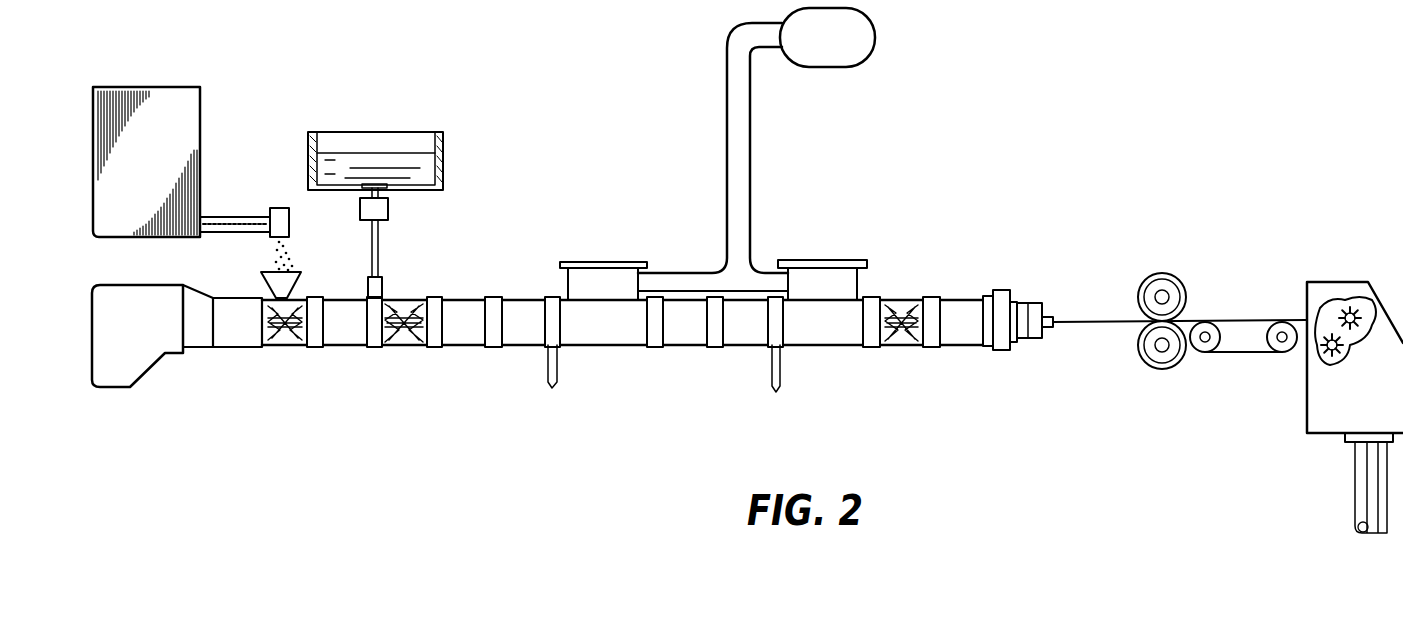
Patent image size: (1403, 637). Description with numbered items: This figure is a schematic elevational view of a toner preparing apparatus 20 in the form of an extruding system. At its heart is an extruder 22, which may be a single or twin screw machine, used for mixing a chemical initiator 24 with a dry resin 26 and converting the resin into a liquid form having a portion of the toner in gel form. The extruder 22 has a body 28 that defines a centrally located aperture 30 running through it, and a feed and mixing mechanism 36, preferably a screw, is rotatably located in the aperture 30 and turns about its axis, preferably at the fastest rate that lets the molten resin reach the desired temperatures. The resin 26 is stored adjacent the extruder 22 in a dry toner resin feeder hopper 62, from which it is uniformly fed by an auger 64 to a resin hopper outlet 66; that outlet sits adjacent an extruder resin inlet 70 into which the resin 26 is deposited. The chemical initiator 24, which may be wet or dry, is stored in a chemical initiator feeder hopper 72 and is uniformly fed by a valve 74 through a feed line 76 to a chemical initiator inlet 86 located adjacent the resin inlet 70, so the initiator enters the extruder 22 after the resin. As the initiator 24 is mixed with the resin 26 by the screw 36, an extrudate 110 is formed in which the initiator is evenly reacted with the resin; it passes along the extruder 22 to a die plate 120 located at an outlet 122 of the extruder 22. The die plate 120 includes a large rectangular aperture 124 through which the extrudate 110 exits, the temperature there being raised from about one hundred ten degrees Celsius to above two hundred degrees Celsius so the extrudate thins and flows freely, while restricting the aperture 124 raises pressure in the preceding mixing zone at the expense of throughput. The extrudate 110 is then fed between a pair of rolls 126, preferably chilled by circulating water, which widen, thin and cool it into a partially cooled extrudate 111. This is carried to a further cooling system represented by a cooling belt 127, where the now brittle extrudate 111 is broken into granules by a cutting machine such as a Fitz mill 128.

The toner preparing apparatus 20 is at (445, 58).
The extruder 22 is at (993, 103).
The chemical initiator 24 is at (422, 160).
The dry resin 26 is at (263, 264).
The body 28 is at (518, 298).
The aperture 30 is at (410, 340).
The feed and mixing mechanism 36 is at (405, 300).
The dry toner resin feeder hopper 62 is at (190, 107).
The auger 64 is at (233, 218).
The resin hopper outlet 66 is at (280, 209).
The extruder resin inlet 70 is at (300, 280).
The chemical initiator feeder hopper 72 is at (438, 181).
The valve 74 is at (359, 210).
The liquid feed line 76 is at (379, 240).
The chemical initiator inlet 86 is at (383, 284).
The extrudate 110 is at (1083, 321).
The partially cooled extrudate 111 is at (1240, 320).
The die plate 120 is at (1035, 302).
The outlet 122 is at (1025, 297).
The aperture 124 is at (1055, 324).
The rolls 126 is at (1137, 323).
The cooling belt 127 is at (1242, 354).
The Fitz mill 128 is at (1307, 402).